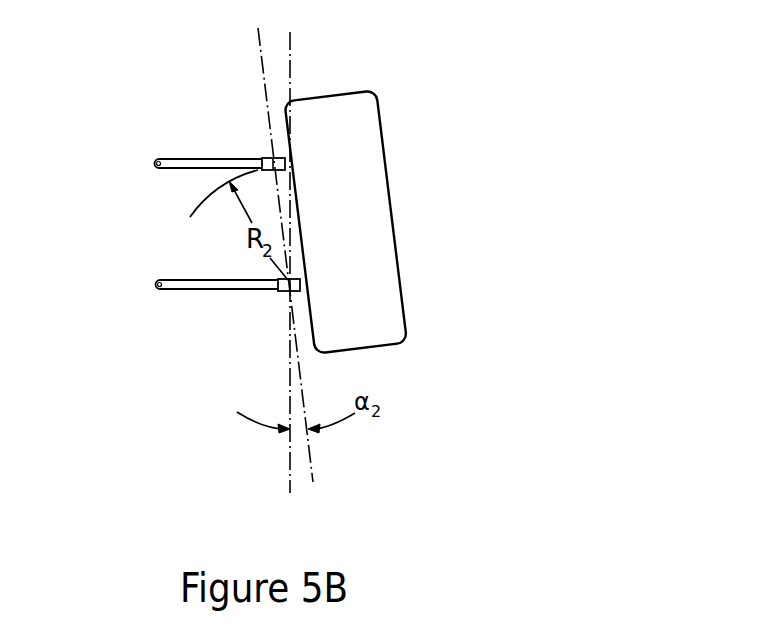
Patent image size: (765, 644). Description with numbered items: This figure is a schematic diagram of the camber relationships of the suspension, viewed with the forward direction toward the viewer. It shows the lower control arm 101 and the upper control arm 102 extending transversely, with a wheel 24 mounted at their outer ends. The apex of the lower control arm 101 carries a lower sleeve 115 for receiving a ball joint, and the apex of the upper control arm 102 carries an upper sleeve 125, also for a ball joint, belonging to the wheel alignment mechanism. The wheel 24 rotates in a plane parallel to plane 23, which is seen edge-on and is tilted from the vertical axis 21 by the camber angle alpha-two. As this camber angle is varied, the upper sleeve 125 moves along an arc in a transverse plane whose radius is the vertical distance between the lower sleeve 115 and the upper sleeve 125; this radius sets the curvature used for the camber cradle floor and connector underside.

The vertical axis 21 is at (290, 472).
The plane 23 is at (313, 467).
The wheel 24 is at (358, 134).
The lower control arm 101 is at (186, 292).
The upper control arm 102 is at (176, 158).
The lower sleeve 115 is at (284, 292).
The upper sleeve 125 is at (270, 157).